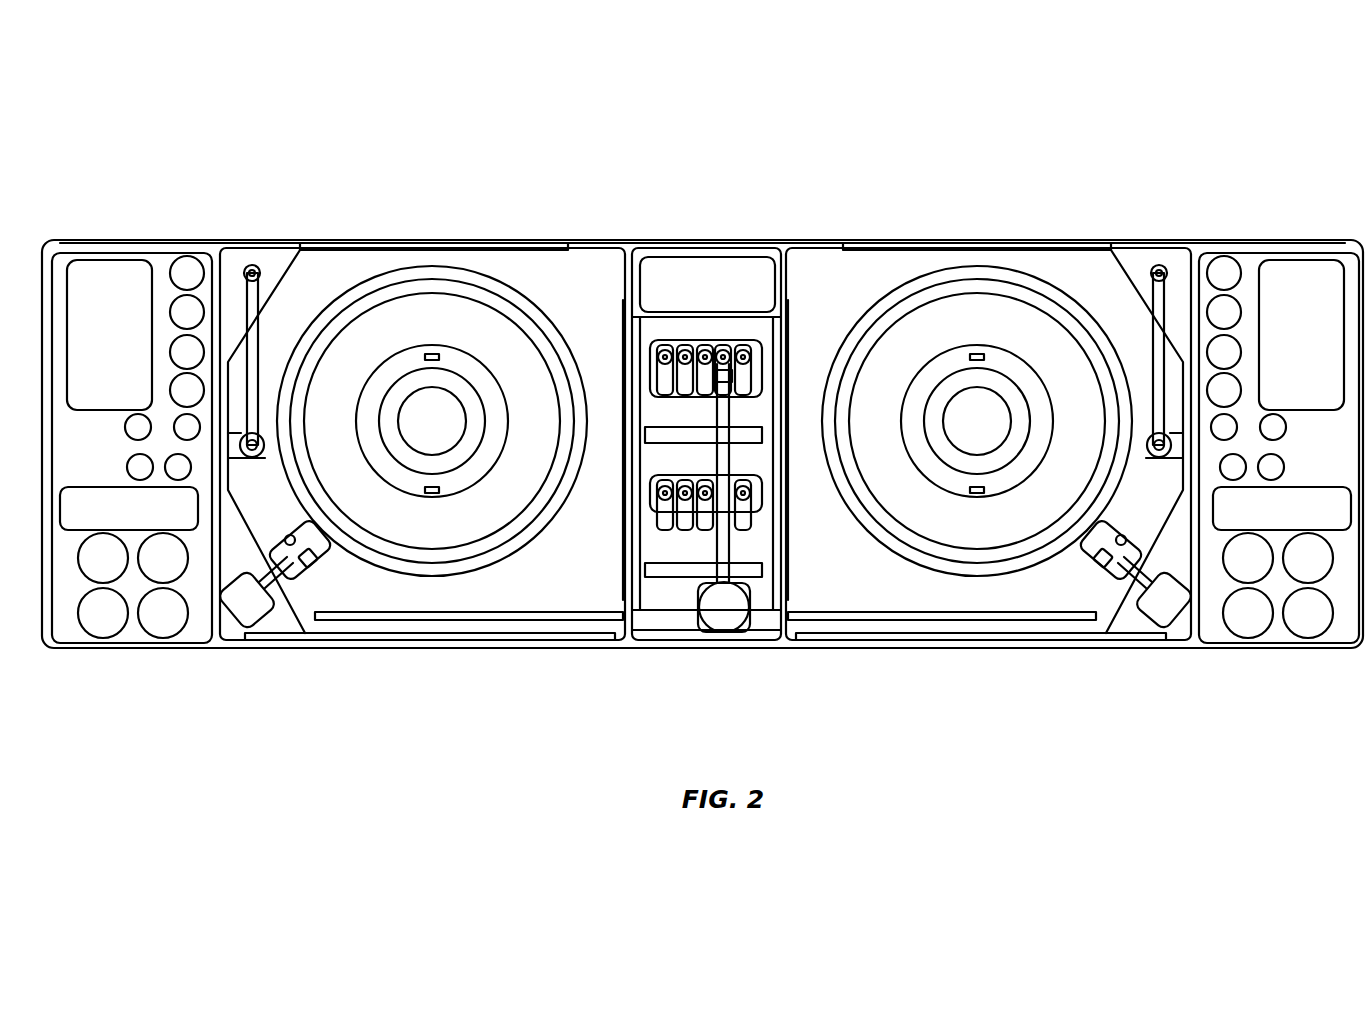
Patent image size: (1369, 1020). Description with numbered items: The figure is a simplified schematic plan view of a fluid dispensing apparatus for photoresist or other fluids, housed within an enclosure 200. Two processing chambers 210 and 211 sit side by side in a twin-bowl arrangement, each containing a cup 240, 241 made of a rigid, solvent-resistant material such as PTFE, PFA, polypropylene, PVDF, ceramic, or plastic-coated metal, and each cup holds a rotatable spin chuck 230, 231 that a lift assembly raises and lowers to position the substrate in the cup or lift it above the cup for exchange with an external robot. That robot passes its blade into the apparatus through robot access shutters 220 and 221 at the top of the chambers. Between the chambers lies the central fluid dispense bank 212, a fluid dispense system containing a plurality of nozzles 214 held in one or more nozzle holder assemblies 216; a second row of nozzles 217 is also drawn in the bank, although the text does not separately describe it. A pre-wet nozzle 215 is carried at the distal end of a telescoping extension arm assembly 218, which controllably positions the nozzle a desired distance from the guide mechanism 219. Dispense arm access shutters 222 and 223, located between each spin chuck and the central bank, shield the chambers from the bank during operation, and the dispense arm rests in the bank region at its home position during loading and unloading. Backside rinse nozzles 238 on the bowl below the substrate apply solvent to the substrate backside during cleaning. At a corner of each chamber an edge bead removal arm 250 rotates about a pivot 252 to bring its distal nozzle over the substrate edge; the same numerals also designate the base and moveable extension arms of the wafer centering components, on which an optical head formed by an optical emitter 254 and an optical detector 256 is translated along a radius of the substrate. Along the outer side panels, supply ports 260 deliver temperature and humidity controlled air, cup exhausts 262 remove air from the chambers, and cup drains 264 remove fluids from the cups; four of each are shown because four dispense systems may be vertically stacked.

The enclosure 200 is at (918, 114).
The processing chamber 210 is at (512, 262).
The processing chamber 211 is at (860, 265).
The central fluid dispense bank 212 is at (672, 595).
The nozzles 214 is at (665, 372).
The pre-wet nozzle 215 is at (726, 350).
The nozzle holder assembly 216 is at (757, 340).
The lower control knobs 217 is at (702, 478).
The extension arm assembly 218 is at (728, 548).
The guide mechanism 219 is at (992, 615).
The robot access shutter 220 is at (345, 245).
The robot access shutter 221 is at (988, 245).
The dispense arm access shutter 222 is at (624, 556).
The dispense arm access shutter 223 is at (788, 556).
The rotatable spin chuck 230 is at (403, 515).
The rotatable spin chuck 231 is at (965, 525).
The backside rinse (BSR) nozzles 238 is at (975, 355).
The cup 240 is at (478, 575).
The cup 241 is at (968, 580).
The edge bead removal (EBR) arm 250 is at (243, 607).
The pivot 252 is at (285, 592).
The optical emitter 254 is at (300, 530).
The optical detector 256 is at (309, 562).
The supply ports 260 is at (163, 613).
The cup exhausts 262 is at (188, 270).
The cup drains 264 is at (138, 425).